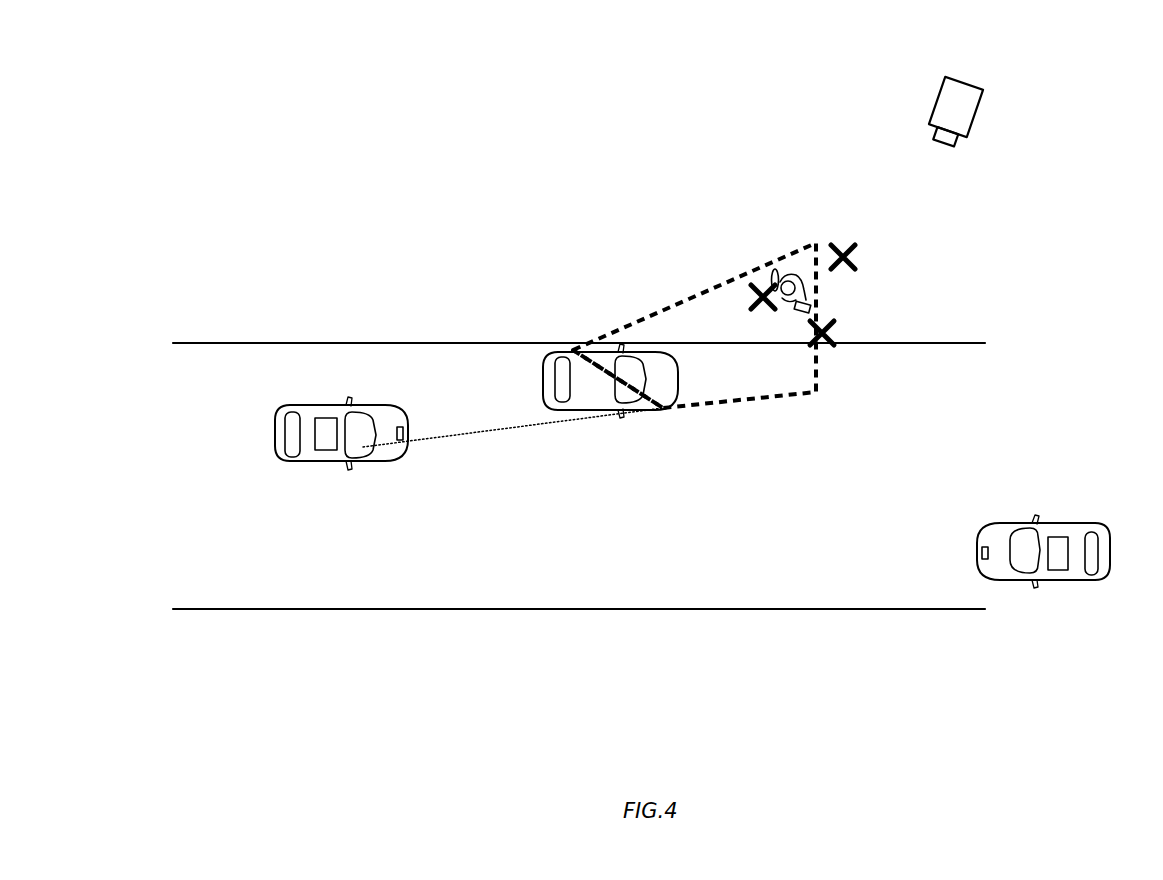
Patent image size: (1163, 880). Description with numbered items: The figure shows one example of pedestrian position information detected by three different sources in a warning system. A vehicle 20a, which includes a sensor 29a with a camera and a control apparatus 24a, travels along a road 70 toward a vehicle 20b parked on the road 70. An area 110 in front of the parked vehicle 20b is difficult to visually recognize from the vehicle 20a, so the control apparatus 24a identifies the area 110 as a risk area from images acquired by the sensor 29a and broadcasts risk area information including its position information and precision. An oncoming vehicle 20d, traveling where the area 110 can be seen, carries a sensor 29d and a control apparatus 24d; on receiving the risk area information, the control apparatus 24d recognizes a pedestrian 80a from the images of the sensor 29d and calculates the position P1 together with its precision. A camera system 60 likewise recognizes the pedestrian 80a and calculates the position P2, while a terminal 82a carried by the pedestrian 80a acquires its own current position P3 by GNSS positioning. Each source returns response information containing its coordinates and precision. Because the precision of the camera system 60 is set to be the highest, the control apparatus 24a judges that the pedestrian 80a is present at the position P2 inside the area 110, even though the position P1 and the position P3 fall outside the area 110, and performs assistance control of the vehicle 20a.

The road 70 is at (302, 592).
The vehicle 20a is at (327, 434).
The control apparatus 24a is at (330, 452).
The sensor 29a is at (403, 426).
The vehicle 20b is at (543, 393).
The area 110 is at (664, 306).
The pedestrian 80a is at (822, 263).
The terminal 82a is at (811, 303).
The position P1 is at (832, 340).
The position P2 is at (760, 288).
The position P3 is at (843, 247).
The camera system 60 is at (962, 79).
The vehicle 20d is at (1031, 545).
The control apparatus 24d is at (1058, 537).
The sensor 29d is at (978, 552).